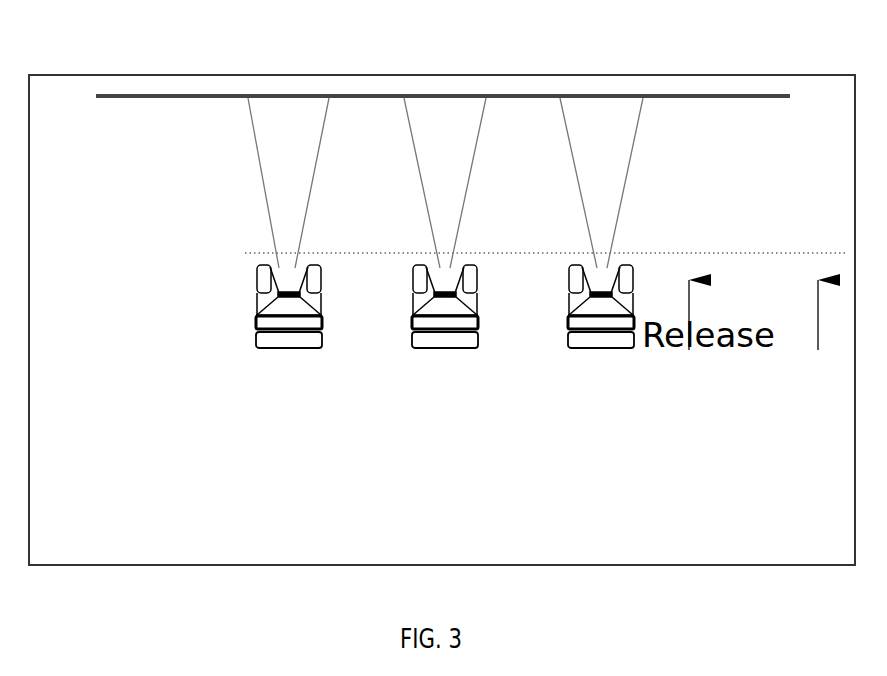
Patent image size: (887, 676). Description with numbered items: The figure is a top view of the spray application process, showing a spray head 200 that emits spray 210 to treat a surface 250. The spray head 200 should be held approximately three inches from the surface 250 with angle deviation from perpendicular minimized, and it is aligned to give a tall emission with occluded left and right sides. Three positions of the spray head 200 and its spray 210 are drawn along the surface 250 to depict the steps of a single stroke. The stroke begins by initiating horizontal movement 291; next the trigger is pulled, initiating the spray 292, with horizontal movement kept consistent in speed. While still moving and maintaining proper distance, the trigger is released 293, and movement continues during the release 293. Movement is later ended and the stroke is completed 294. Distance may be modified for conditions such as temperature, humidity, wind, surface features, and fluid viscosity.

The surface 250 is at (516, 92).
The spray 210 is at (265, 190).
The spray head 200 is at (256, 326).
The horizontal movement 291 is at (93, 260).
The initiating the spray 292 is at (292, 362).
The release 293 is at (627, 365).
The stroke completion 294 is at (715, 353).